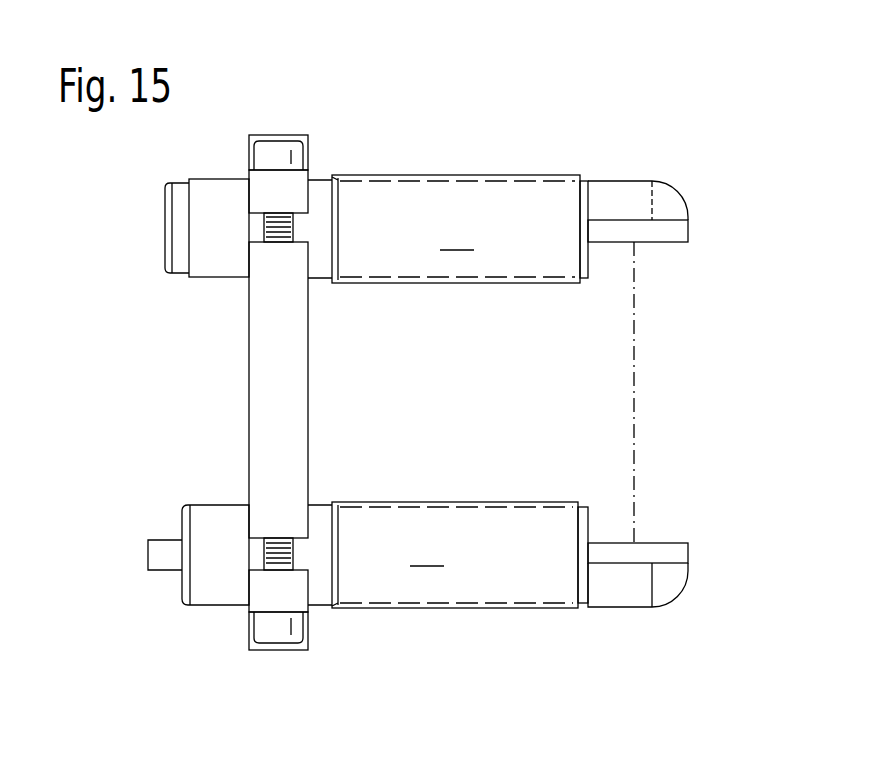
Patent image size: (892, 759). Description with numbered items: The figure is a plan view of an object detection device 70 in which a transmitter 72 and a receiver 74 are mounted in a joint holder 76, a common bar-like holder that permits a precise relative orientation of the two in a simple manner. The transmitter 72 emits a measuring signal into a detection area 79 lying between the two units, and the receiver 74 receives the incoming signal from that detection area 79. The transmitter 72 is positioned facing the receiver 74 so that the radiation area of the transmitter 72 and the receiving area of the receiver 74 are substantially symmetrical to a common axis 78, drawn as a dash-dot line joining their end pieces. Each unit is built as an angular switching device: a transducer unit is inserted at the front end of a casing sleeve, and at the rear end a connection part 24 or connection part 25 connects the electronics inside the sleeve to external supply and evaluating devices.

The connection part 24 is at (175, 220).
The connection part 25 is at (150, 558).
The object detection device 70 is at (461, 132).
The transmitter 72 is at (444, 229).
The receiver 74 is at (443, 555).
The joint holder 76 is at (264, 402).
The common axis 78 is at (634, 377).
The detection area 79 is at (650, 427).